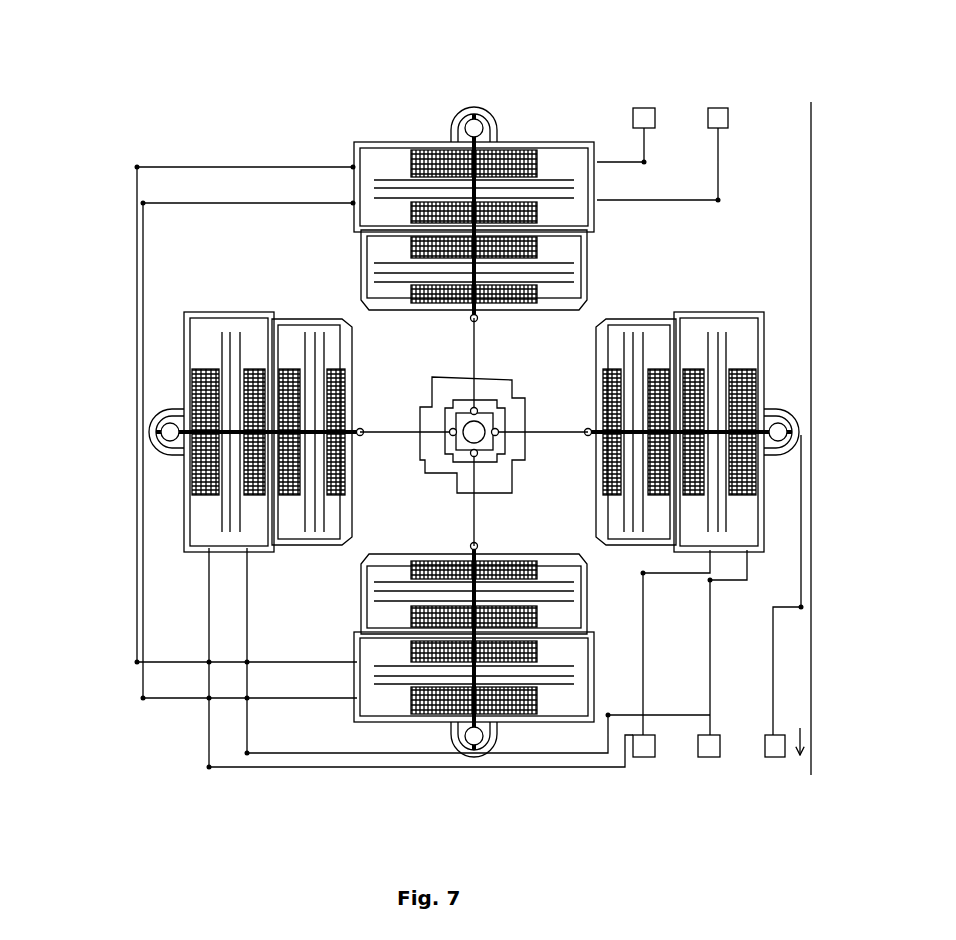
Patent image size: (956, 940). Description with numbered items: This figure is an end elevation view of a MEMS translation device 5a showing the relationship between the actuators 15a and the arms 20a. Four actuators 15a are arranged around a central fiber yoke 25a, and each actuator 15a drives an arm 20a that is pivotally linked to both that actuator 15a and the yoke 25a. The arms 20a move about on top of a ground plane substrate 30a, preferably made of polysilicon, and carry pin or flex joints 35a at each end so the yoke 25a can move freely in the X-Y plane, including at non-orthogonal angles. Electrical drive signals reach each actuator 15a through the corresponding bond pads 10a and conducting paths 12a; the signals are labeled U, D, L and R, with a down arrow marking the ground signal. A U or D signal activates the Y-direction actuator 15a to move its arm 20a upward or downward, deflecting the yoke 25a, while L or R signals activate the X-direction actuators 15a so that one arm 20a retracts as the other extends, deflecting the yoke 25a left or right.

The micro-mirror actuator device 5a is at (765, 256).
The bond pads 10a is at (700, 90).
The conducting paths 12a is at (263, 203).
The actuators 15a is at (595, 247).
The arms 20a is at (476, 362).
The fiber yoke 25a is at (508, 490).
The ground plane substrate 30a is at (432, 392).
The pin or flex joints 35a is at (473, 405).